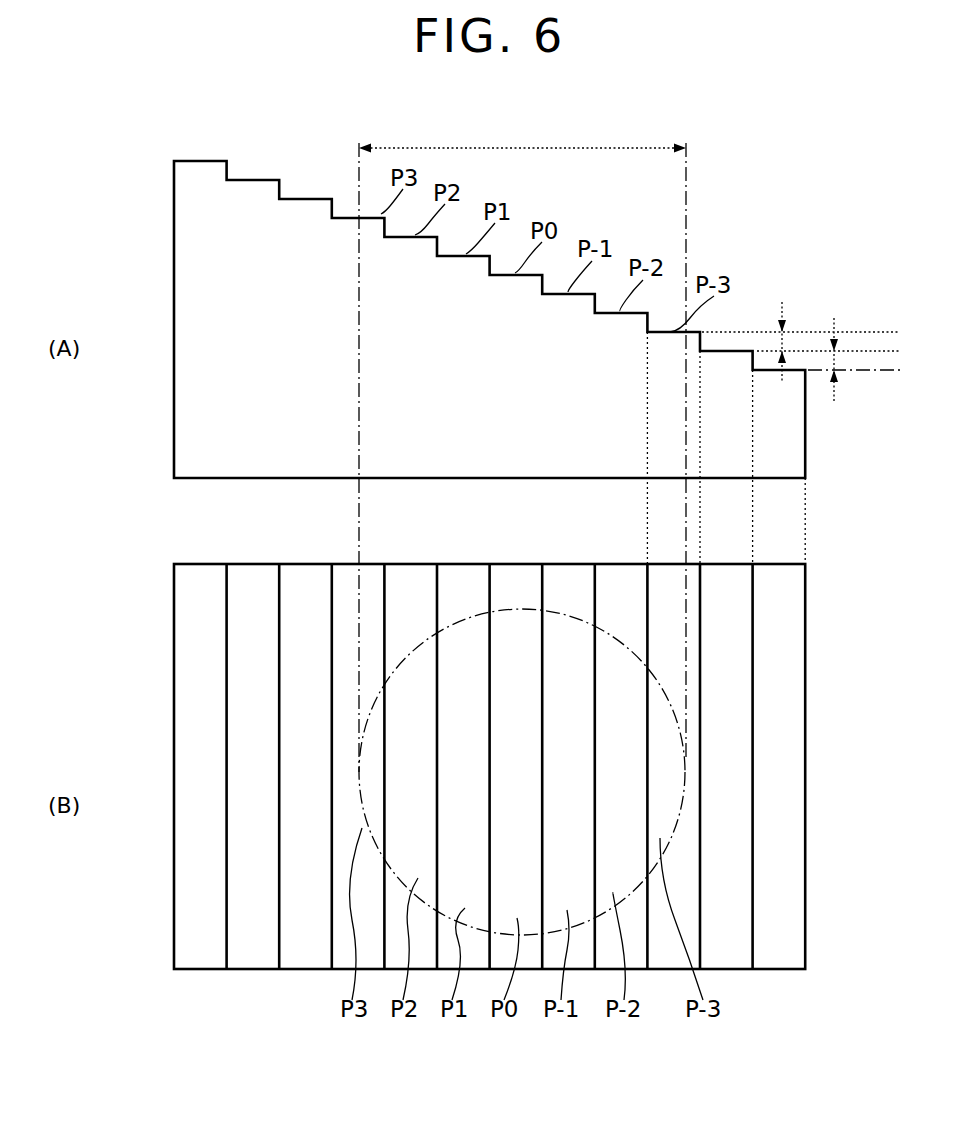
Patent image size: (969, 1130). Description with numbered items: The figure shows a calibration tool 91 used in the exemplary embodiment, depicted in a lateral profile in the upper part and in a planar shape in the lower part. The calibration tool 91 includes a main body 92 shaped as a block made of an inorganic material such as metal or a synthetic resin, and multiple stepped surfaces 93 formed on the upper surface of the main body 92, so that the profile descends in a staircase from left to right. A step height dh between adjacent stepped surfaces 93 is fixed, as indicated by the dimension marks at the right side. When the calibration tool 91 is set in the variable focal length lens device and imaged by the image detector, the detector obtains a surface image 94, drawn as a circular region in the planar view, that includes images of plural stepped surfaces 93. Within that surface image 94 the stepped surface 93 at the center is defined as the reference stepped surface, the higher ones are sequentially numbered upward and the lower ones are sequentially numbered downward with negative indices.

The calibration tool 91 is at (174, 161).
The main body 92 is at (185, 402).
The stepped surfaces 93 is at (310, 198).
The surface image 94 is at (490, 148).